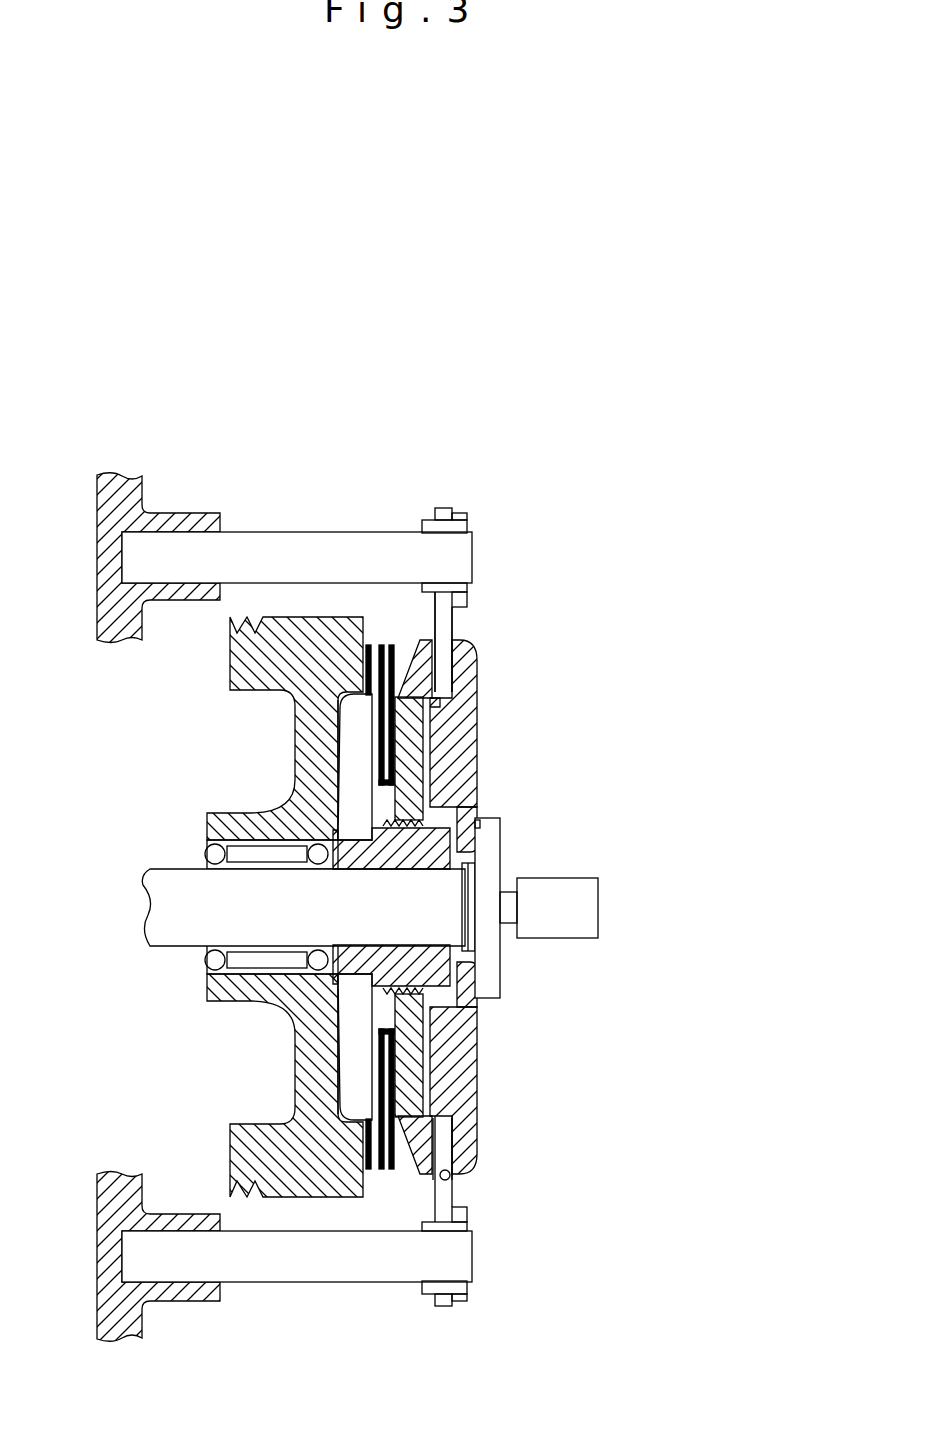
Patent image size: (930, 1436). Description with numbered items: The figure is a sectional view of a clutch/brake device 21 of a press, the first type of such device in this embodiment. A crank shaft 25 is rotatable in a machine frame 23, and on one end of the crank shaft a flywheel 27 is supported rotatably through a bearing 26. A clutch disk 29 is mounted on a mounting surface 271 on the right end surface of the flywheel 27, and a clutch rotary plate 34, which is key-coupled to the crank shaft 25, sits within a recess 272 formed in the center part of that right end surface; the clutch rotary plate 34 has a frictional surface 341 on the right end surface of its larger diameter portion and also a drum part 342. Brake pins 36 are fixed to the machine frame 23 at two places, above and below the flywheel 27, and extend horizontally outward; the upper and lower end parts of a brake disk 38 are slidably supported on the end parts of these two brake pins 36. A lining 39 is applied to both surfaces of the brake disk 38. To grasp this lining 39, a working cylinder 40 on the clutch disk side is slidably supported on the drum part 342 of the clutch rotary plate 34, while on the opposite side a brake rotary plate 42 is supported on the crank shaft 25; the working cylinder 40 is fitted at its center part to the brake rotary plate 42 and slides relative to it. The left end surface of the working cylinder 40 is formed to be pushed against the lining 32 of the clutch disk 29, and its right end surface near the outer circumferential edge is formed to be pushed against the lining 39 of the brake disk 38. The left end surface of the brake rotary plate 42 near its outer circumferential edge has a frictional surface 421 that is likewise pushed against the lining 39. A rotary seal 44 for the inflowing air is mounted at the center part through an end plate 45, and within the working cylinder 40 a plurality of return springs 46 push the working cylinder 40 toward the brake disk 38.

The clutch/brake device 21 is at (480, 350).
The machine frame 23 is at (145, 503).
The crank shaft 25 is at (203, 913).
The bearing 26 is at (202, 852).
The flywheel 27 is at (233, 680).
The mounting surface 271 is at (370, 633).
The recess 272 is at (333, 733).
The clutch disk 29 is at (403, 640).
The lining 32 is at (397, 740).
The clutch rotary plate 34 is at (357, 818).
The frictional surface 341 is at (340, 783).
The drum part 342 is at (485, 858).
The brake pins 36 is at (272, 548).
The brake disk 38 is at (443, 607).
The lining 39 is at (437, 1157).
The working cylinder 40 is at (408, 1038).
The brake rotary plate 42 is at (467, 1030).
The frictional surface 421 is at (450, 1178).
The rotary seal 44 is at (578, 915).
The end plate 45 is at (490, 948).
The return springs 46 is at (440, 805).